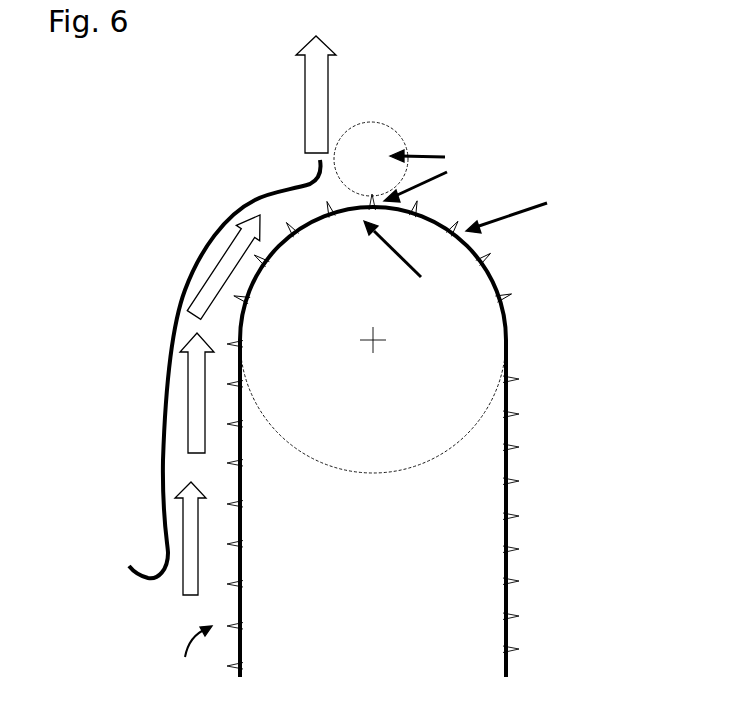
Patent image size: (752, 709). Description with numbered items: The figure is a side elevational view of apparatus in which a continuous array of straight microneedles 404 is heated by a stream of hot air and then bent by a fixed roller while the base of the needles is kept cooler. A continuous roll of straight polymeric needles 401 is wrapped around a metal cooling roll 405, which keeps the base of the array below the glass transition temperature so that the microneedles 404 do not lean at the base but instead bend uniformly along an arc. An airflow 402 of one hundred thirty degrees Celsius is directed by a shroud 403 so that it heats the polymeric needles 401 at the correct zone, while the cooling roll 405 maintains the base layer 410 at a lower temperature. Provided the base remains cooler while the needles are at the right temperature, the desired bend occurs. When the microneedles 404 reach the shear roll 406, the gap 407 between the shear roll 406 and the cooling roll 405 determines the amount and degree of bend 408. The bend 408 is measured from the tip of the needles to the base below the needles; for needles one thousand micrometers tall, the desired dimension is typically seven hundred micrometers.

The continuous roll of straight polymeric needles 401 is at (186, 657).
The airflow 402 is at (188, 598).
The shroud 403 is at (230, 216).
The straight microneedles 404 is at (277, 210).
The metal cooling roll 405 is at (373, 340).
The shear roll 406 is at (403, 130).
The gap 407 is at (434, 231).
The bend 408 is at (530, 216).
The base layer 410 is at (242, 527).